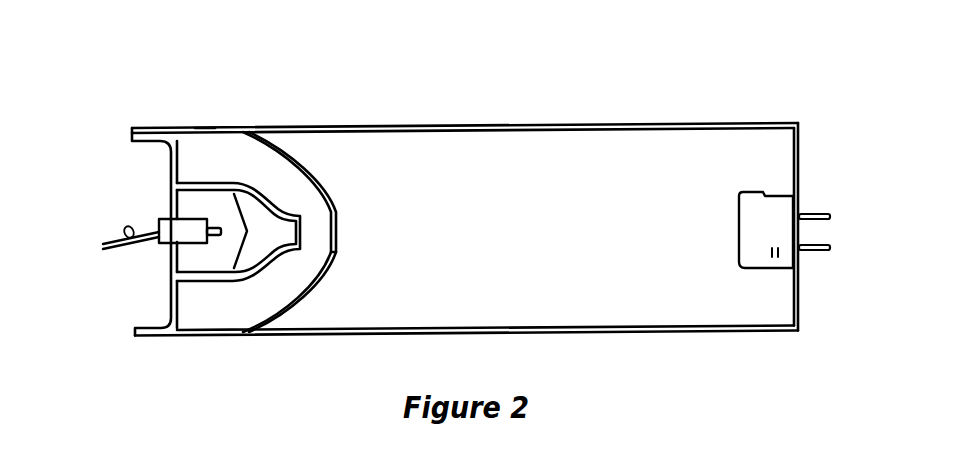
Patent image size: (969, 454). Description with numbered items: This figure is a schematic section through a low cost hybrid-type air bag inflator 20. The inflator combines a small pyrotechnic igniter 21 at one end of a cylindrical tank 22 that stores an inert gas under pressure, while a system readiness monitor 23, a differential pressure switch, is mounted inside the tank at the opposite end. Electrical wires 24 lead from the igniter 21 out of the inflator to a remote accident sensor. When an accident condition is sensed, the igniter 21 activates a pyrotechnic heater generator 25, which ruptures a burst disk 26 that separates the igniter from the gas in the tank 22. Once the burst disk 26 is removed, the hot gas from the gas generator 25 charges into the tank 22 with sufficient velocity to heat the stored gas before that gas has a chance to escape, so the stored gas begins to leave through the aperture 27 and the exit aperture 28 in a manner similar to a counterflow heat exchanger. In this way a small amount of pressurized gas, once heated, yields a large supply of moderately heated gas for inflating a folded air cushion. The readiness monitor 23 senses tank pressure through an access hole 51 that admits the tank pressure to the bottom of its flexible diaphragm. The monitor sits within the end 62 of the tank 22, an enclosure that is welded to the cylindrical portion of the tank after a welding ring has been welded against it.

The hybrid-type air bag inflator 20 is at (315, 110).
The pyrotechnic igniter 21 is at (148, 200).
The tank 22 is at (512, 123).
The system readiness monitor 23 is at (738, 213).
The electrical wires 24 is at (128, 238).
The pyrotechnic heater generator 25 is at (265, 236).
The burst disk 26 is at (337, 230).
The aperture 27 is at (340, 252).
The exit aperture 28 is at (205, 130).
The access hole 51 is at (775, 268).
The end of the tank 62 is at (800, 165).